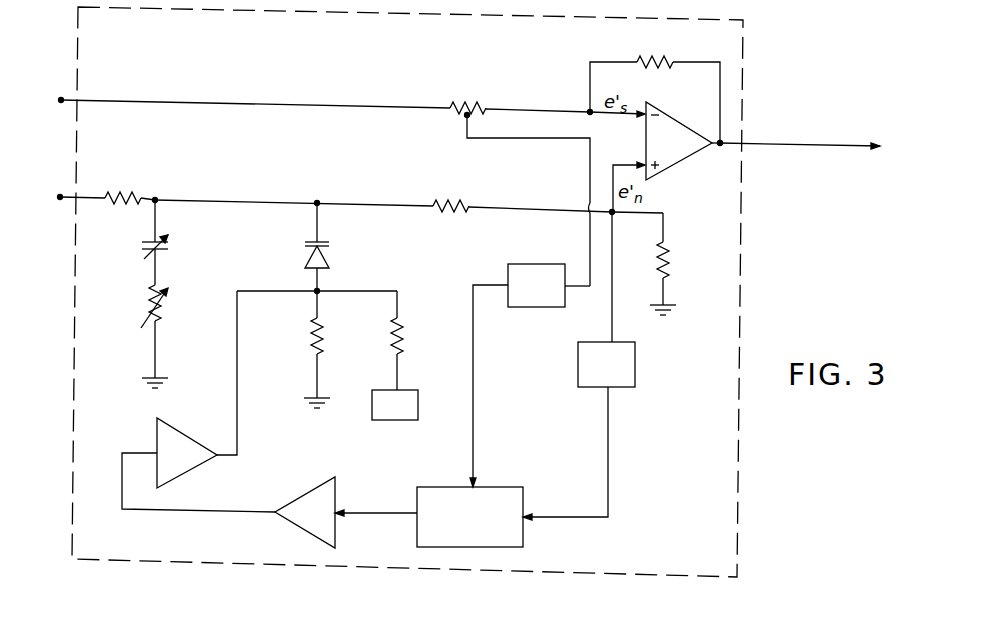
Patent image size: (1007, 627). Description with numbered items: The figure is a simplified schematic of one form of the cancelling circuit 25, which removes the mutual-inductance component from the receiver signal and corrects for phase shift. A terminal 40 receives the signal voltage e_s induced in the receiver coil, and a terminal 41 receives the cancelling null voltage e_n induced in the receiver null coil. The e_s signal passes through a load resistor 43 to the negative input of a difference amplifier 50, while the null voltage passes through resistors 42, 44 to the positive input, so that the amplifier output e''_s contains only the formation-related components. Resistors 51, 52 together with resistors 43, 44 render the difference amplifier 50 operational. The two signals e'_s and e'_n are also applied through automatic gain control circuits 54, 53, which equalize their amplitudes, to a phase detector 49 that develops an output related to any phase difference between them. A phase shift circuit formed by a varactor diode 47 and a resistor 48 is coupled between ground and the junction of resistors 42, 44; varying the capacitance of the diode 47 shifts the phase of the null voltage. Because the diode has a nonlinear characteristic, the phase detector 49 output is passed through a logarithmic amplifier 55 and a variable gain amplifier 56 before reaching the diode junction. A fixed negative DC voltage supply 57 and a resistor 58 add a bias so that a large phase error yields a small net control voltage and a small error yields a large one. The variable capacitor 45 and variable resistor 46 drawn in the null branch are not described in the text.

The cancelling circuit 25 is at (690, 578).
The terminal 40 is at (60, 103).
The terminal 41 is at (59, 200).
The resistor 42 is at (135, 192).
The load resistor 43 is at (470, 100).
The resistor 44 is at (458, 201).
The variable capacitor 45 is at (172, 249).
The variable resistor 46 is at (166, 316).
The varactor diode 47 is at (334, 256).
The resistor 48 is at (308, 340).
The phase detector 49 is at (437, 487).
The difference amplifier 50 is at (682, 158).
The resistor 51 is at (660, 61).
The resistor 52 is at (670, 262).
The automatic gain control circuit 53 is at (636, 381).
The automatic gain control circuit 54 is at (524, 308).
The logarithmic amplifier 55 is at (307, 490).
The variable gain amplifier 56 is at (190, 432).
The fixed negative DC voltage supply 57 is at (395, 423).
The resistor 58 is at (404, 336).